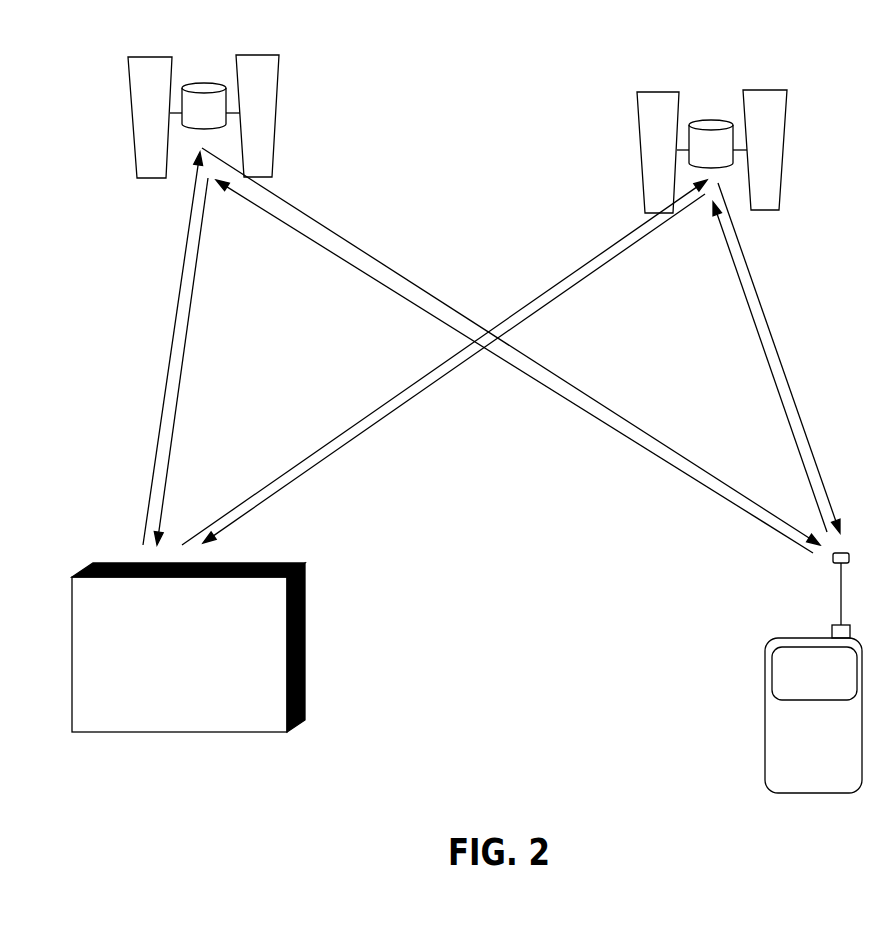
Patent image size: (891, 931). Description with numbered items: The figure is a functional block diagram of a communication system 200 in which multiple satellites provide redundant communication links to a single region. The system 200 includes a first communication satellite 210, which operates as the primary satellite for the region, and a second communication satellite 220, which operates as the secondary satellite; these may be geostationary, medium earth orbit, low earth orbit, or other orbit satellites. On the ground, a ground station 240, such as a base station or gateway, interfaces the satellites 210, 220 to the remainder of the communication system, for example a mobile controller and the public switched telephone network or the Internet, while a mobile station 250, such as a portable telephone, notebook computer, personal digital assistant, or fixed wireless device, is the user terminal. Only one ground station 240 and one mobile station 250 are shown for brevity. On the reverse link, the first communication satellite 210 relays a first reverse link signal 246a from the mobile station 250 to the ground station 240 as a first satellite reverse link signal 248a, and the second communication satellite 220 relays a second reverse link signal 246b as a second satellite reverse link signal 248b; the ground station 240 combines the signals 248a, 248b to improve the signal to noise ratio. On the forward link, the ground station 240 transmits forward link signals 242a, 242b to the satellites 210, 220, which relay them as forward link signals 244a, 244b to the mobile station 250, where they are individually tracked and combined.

The communication system 200 is at (880, 70).
The first communication satellite 210 is at (113, 117).
The second communication satellite 220 is at (622, 122).
The ground station 240 is at (183, 669).
The mobile station 250 is at (805, 695).
The forward link signal 242a is at (163, 410).
The first satellite reverse link signal 248a is at (194, 278).
The forward link signal 244a is at (557, 380).
The first reverse link signal 246a is at (568, 409).
The forward link signal 242b is at (368, 415).
The second satellite reverse link signal 248b is at (312, 468).
The forward link signal 244b is at (773, 347).
The second reverse link signal 246b is at (735, 290).